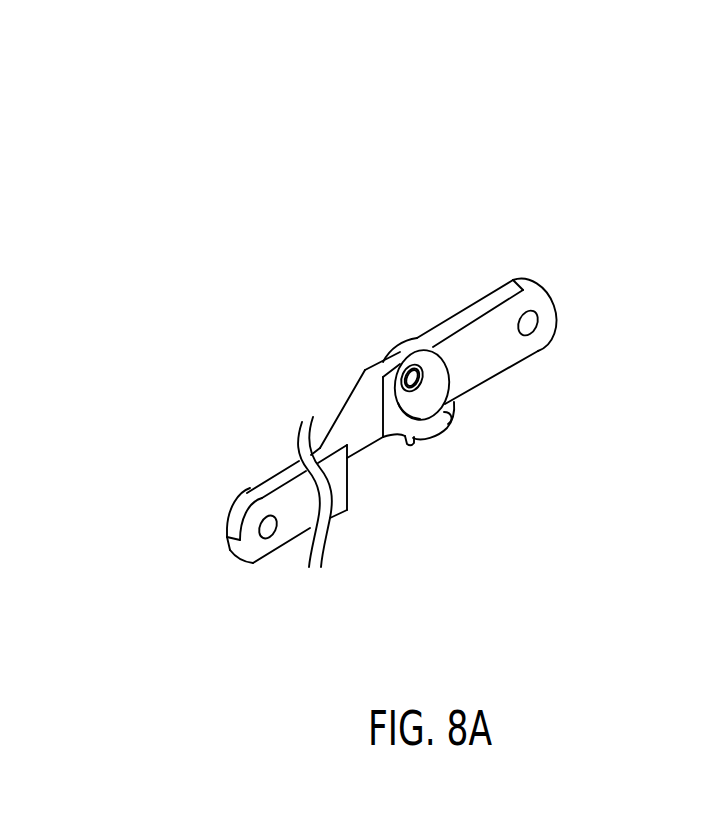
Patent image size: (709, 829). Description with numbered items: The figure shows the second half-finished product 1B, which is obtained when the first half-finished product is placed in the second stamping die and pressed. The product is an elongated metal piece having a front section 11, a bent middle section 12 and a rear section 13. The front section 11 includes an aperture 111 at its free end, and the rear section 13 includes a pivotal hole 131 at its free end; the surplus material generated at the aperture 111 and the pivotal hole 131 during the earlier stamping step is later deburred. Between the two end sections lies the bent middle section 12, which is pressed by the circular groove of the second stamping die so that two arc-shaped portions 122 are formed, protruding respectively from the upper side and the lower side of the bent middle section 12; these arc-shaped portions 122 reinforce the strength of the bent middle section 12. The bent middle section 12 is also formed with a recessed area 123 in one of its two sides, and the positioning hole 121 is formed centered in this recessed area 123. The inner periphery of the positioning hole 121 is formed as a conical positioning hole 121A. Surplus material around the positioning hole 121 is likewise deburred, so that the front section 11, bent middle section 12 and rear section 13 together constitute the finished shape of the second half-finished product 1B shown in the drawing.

The second half-finished product 1B is at (205, 135).
The front section 11 is at (295, 508).
The aperture 111 is at (263, 530).
The bent middle section 12 is at (378, 407).
The positioning hole 121 is at (428, 412).
The conical positioning hole 121A is at (413, 370).
The arc-shaped portions 122 is at (427, 435).
The recessed area 123 is at (438, 372).
The rear section 13 is at (542, 307).
The pivotal hole 131 is at (530, 330).